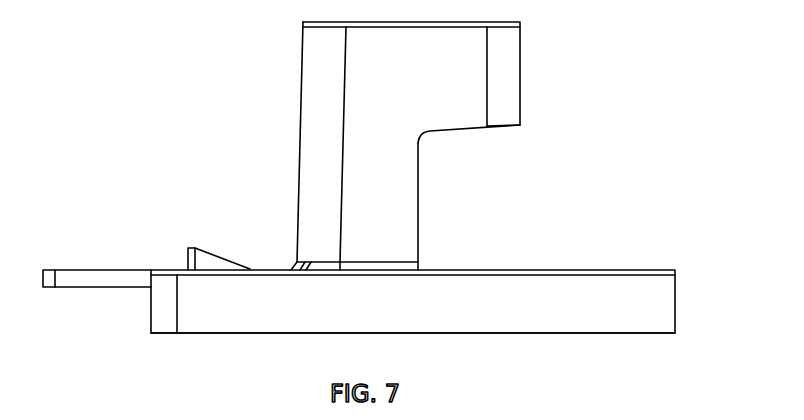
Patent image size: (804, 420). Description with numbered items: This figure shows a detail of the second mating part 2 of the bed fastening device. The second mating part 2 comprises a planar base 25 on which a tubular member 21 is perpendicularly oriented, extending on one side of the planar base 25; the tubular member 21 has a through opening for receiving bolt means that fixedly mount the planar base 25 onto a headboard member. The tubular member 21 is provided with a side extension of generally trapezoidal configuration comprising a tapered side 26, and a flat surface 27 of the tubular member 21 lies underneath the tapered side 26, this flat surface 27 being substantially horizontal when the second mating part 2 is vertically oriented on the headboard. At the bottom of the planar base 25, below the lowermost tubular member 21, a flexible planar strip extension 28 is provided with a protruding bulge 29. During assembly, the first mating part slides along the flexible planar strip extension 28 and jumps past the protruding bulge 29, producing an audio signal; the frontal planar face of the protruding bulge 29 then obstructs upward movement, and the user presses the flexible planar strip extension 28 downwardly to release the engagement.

The second mating part 2 is at (215, 342).
The tubular member 21 is at (285, 110).
The planar base 25 is at (532, 313).
The tapered side 26 is at (468, 128).
The flat surface 27 is at (418, 214).
The flexible planar strip extension 28 is at (88, 288).
The protruding bulge 29 is at (213, 253).